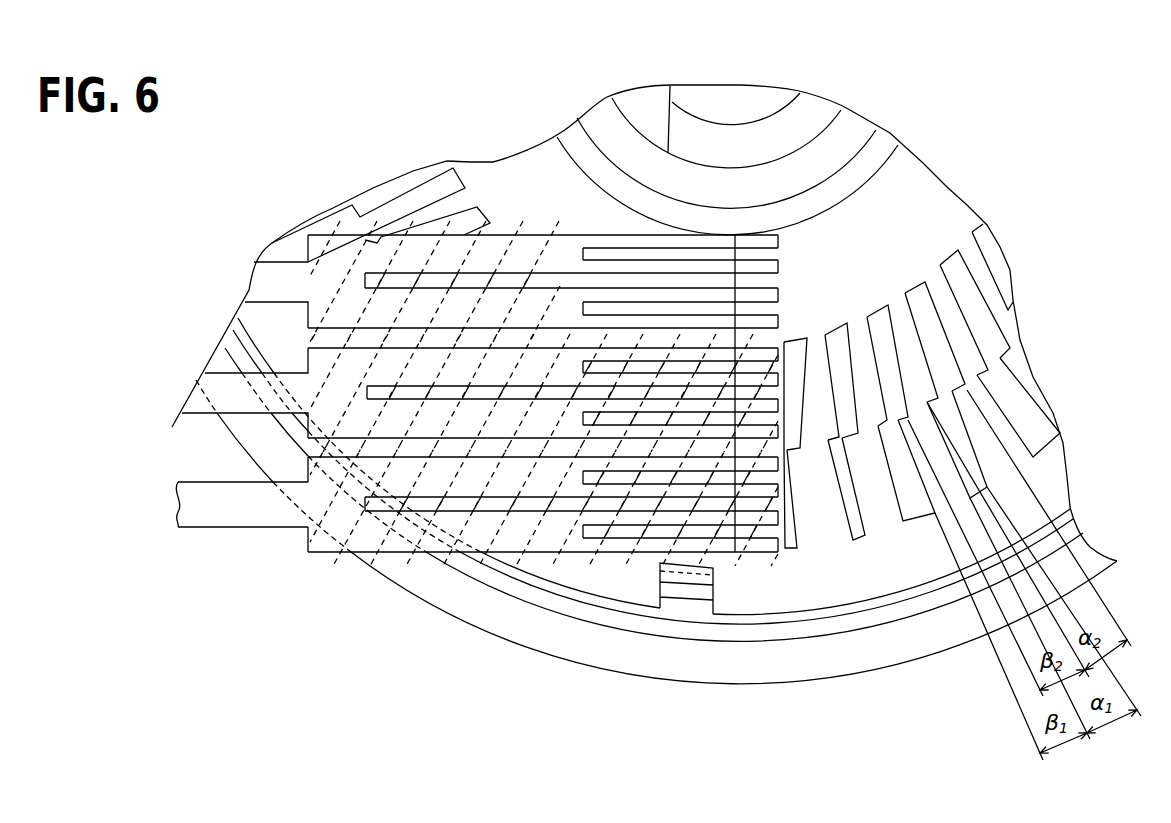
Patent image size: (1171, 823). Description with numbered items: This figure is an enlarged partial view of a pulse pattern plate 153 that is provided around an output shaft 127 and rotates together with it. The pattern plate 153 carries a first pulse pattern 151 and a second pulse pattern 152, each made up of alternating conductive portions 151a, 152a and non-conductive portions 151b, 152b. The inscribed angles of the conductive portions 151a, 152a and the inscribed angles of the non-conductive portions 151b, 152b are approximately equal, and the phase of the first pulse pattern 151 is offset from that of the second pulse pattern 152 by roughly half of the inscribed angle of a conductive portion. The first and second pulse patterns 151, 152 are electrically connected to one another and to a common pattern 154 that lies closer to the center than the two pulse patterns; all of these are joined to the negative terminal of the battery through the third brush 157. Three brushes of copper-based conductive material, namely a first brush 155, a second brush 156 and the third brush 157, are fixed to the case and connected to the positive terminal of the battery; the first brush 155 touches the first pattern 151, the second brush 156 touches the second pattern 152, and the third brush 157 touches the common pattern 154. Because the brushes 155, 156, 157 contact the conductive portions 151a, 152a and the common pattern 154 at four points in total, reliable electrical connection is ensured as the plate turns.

The output shaft 127 is at (737, 108).
The first pulse pattern 151 is at (967, 551).
The conductive portion 151a is at (843, 532).
The non-conductive portion 151b is at (880, 510).
The second pulse pattern 152 is at (887, 437).
The conductive portion 152a is at (830, 415).
The non-conductive portion 152b is at (935, 505).
The pulse pattern plate 153 is at (755, 574).
The common pattern 154 is at (943, 218).
The first brush 155 is at (250, 515).
The second brush 156 is at (200, 405).
The third brush 157 is at (263, 283).